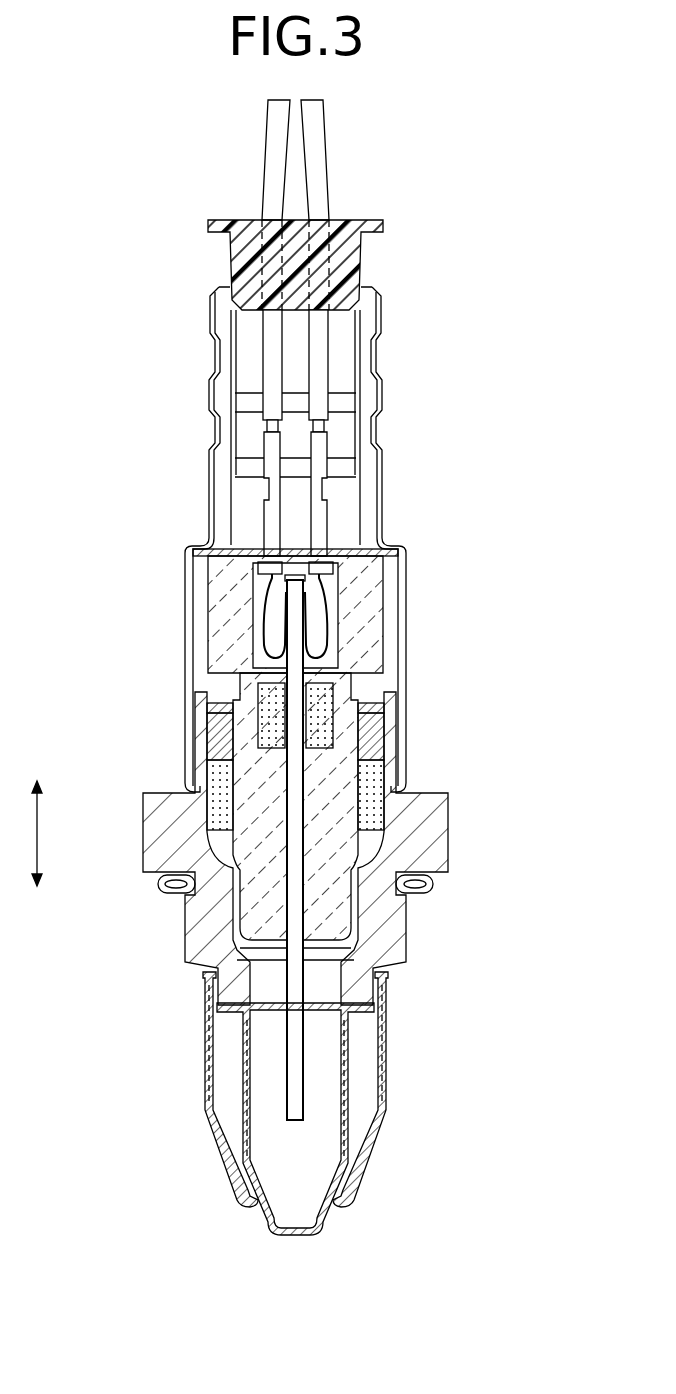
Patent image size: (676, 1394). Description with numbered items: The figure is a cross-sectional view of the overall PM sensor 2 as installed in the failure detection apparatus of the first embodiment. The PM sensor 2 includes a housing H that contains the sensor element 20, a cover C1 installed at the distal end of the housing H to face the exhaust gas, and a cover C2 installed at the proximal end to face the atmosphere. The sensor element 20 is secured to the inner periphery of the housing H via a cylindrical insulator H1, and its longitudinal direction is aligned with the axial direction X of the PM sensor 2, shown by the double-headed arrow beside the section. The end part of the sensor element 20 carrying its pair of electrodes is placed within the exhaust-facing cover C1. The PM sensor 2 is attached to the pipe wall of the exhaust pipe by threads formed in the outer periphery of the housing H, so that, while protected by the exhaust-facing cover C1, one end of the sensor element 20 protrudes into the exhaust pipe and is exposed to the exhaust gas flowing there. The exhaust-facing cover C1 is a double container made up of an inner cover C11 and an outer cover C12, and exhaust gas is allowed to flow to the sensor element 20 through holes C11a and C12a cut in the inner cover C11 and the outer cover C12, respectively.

The PM sensor 2 is at (310, 667).
The cover C2 is at (386, 505).
The housing H is at (413, 815).
The cylindrical insulator H1 is at (333, 767).
The sensor element 20 is at (297, 1108).
The cover C1 is at (396, 1103).
The inner cover C11 is at (368, 1119).
The outer cover C12 is at (365, 1089).
The holes C11a is at (347, 1090).
The holes C12a is at (390, 1040).
The axial direction X is at (46, 833).